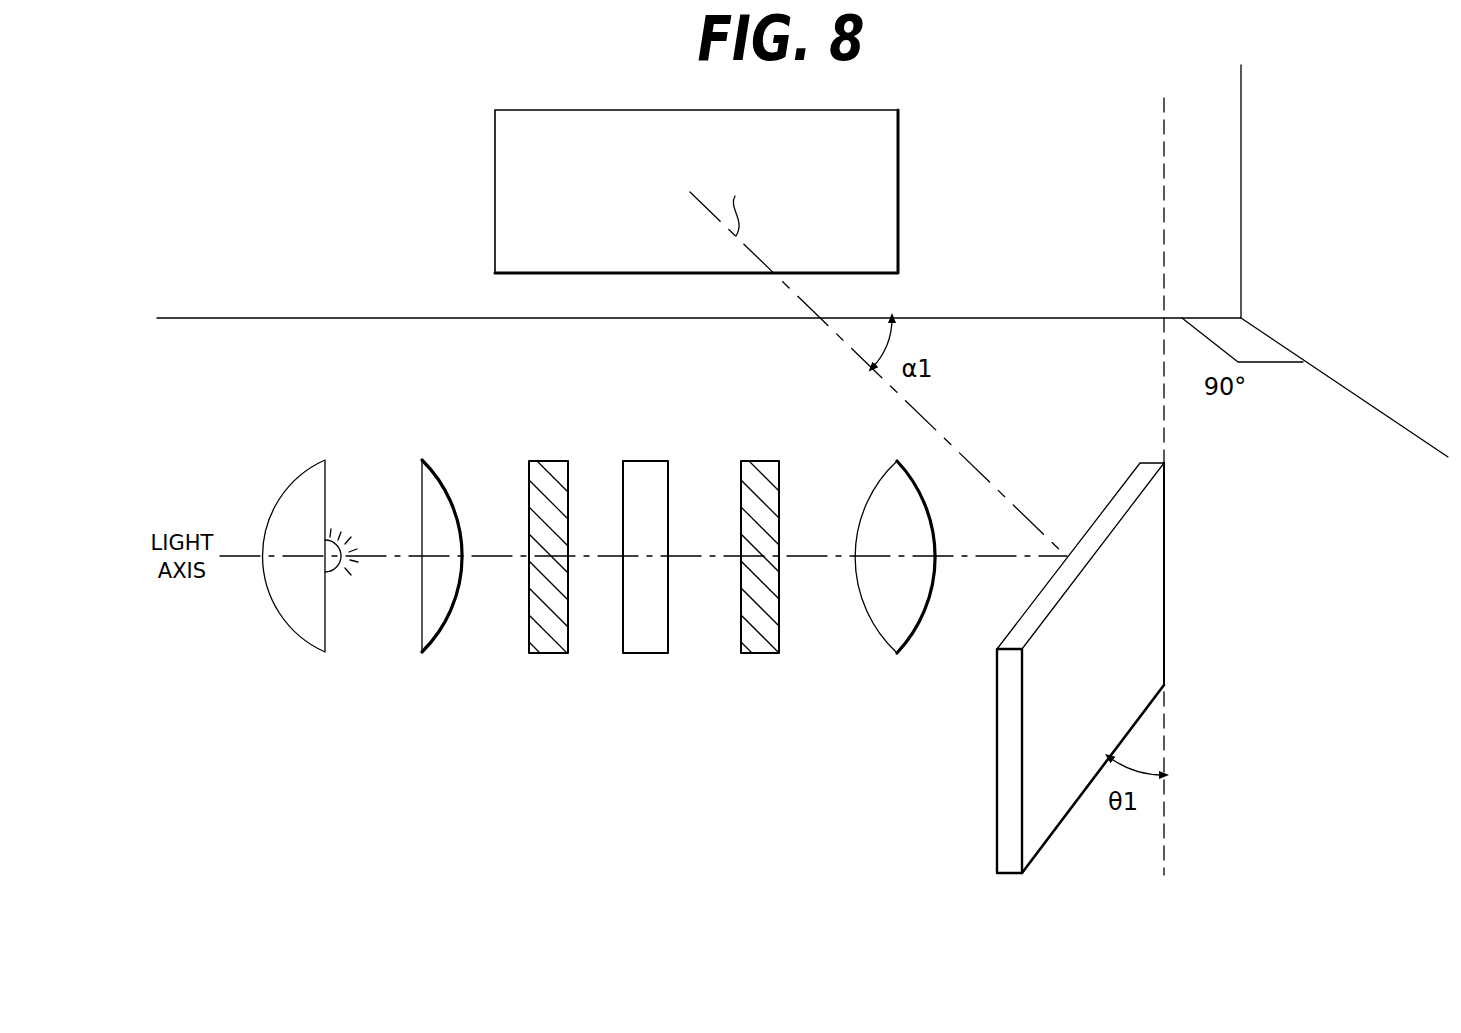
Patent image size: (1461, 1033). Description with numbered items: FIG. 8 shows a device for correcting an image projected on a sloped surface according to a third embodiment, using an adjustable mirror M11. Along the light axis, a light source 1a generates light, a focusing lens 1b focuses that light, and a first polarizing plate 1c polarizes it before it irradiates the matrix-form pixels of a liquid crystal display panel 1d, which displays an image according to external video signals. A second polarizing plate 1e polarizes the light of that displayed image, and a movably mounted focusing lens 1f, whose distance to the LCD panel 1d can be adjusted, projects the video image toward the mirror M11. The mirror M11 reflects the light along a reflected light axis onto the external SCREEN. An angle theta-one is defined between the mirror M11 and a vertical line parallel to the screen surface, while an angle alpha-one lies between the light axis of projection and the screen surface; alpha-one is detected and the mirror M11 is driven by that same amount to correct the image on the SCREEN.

The light source 1a is at (300, 488).
The focusing lens 1b is at (432, 488).
The first polarizing plate 1c is at (549, 475).
The liquid crystal display panel 1d is at (651, 478).
The second polarizing plate 1e is at (762, 478).
The focusing lens 1f is at (882, 487).
The mirror M11 is at (1104, 525).
The screen SCREEN is at (882, 216).